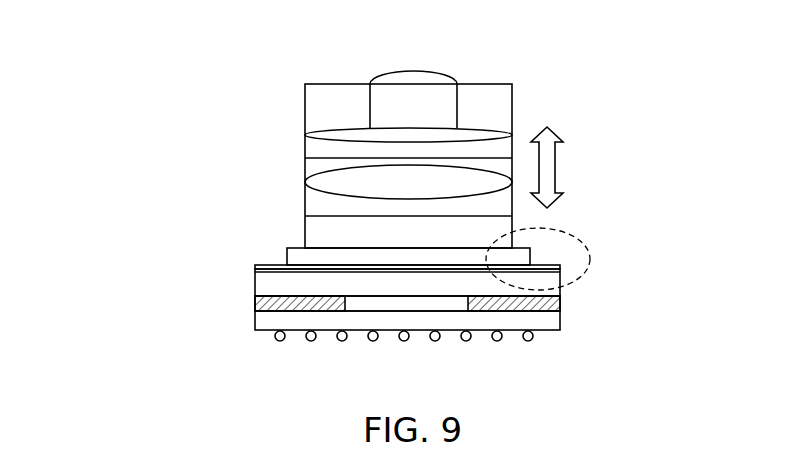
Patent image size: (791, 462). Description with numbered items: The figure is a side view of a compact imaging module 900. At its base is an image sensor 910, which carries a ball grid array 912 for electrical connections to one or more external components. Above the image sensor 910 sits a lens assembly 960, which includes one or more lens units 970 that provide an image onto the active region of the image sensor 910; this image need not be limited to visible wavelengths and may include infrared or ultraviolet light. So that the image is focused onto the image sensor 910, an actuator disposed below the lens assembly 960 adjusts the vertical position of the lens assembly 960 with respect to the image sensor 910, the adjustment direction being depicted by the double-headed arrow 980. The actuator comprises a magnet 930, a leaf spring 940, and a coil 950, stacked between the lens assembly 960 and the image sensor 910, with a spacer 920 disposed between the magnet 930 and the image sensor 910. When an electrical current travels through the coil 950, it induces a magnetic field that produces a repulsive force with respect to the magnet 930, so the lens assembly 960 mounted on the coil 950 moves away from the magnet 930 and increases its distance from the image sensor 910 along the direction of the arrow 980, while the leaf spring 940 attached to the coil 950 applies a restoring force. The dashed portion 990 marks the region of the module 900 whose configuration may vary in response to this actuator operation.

The compact imaging module 900 is at (130, 64).
The image sensor 910 is at (560, 325).
The ball grid array 912 is at (307, 341).
The spacer 920 is at (560, 302).
The magnet 930 is at (253, 282).
The leaf spring 940 is at (255, 266).
The coil 950 is at (285, 258).
The lens assembly 960 is at (270, 84).
The lens unit 970 is at (470, 130).
The arrow 980 is at (557, 173).
The portion 990 is at (572, 233).